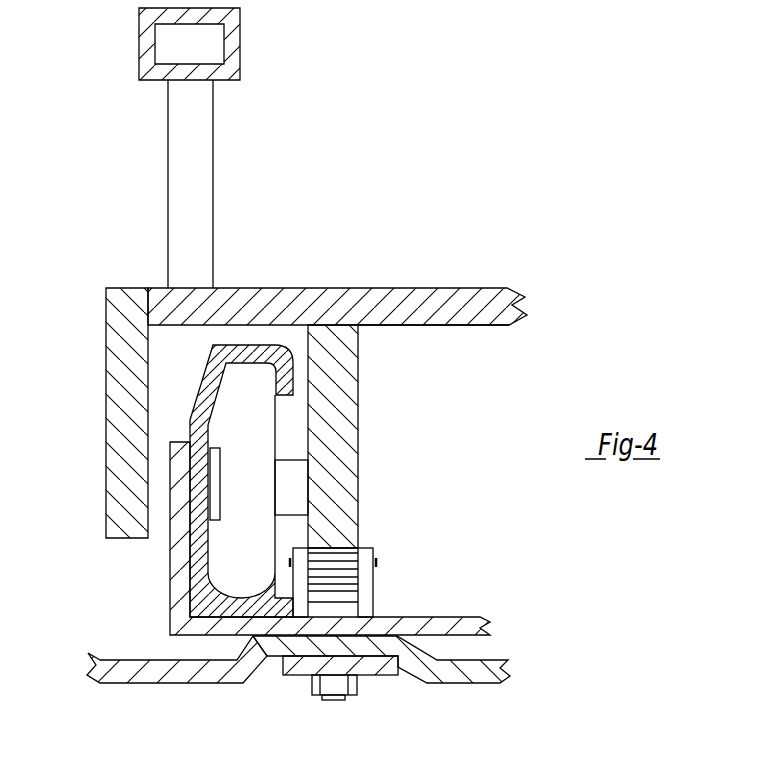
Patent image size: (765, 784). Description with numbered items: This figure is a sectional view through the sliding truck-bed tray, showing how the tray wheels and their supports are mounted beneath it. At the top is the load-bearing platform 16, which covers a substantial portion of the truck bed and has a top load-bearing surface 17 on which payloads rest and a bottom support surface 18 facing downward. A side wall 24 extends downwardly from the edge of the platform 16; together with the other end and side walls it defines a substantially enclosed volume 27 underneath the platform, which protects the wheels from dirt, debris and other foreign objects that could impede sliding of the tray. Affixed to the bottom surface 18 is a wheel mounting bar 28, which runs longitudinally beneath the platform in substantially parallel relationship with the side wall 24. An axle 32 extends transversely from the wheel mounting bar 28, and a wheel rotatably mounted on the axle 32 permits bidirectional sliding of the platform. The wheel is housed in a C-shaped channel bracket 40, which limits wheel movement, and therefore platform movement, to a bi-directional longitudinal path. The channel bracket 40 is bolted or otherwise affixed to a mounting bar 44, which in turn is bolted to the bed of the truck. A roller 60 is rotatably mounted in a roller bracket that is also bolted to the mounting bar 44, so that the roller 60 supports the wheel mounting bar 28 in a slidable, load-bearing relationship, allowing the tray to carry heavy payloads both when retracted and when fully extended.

The load-bearing platform 16 is at (298, 256).
The top load-bearing surface 17 is at (365, 288).
The bottom support surface 18 is at (430, 326).
The side wall 24 is at (106, 398).
The substantially enclosed volume 27 is at (486, 490).
The wheel mounting bar 28 is at (357, 433).
The axle 32 is at (293, 489).
The C-shaped channel bracket 40 is at (200, 385).
The mounting bar 44 is at (170, 568).
The roller 60 is at (333, 563).